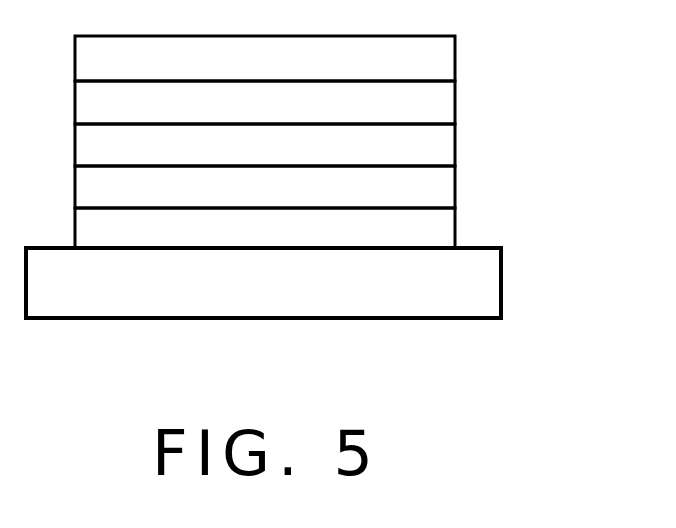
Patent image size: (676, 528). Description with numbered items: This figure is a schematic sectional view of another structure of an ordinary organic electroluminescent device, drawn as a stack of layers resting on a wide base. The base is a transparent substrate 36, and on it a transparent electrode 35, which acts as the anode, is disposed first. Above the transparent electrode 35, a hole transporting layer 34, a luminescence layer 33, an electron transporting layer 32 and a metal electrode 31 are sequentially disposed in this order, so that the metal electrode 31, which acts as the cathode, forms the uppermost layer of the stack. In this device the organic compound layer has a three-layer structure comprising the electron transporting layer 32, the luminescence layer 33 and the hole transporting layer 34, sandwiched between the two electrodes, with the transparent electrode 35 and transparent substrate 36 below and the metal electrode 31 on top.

The metal electrode 31 is at (448, 59).
The electron transporting layer 32 is at (448, 100).
The luminescence layer 33 is at (448, 145).
The hole transporting layer 34 is at (445, 193).
The transparent electrode 35 is at (448, 233).
The transparent substrate 36 is at (493, 292).